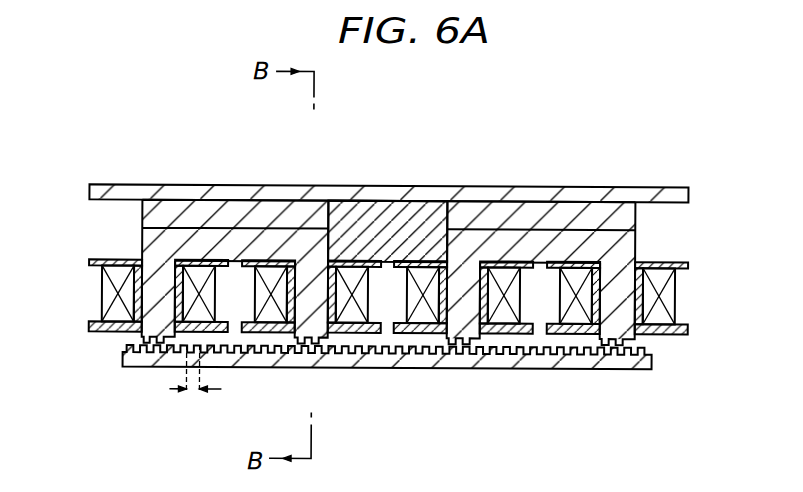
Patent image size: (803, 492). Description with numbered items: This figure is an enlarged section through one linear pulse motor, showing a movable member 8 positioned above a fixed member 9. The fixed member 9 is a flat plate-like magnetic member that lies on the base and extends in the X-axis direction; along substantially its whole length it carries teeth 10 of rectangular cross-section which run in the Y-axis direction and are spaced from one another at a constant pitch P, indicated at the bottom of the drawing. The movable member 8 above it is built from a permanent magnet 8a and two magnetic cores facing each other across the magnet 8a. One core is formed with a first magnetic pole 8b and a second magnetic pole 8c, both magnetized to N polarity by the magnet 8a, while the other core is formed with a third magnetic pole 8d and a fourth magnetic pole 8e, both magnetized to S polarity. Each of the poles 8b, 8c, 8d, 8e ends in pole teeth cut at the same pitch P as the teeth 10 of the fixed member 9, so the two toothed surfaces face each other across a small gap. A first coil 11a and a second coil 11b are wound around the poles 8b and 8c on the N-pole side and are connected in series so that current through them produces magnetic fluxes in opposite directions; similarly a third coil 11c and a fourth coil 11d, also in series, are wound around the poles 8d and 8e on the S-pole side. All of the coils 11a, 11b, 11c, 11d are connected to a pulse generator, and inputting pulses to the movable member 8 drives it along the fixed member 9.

The movable member 8 is at (623, 187).
The permanent magnet 8a is at (382, 212).
The first magnetic pole 8b is at (155, 326).
The second magnetic pole 8c is at (318, 340).
The third magnetic pole 8d is at (447, 338).
The fourth magnetic pole 8e is at (628, 332).
The fixed member 9 is at (386, 385).
The teeth 10 is at (533, 347).
The first coil 11a is at (198, 310).
The second coil 11b is at (353, 275).
The third coil 11c is at (407, 292).
The fourth coil 11d is at (562, 302).
The pitch P is at (195, 381).